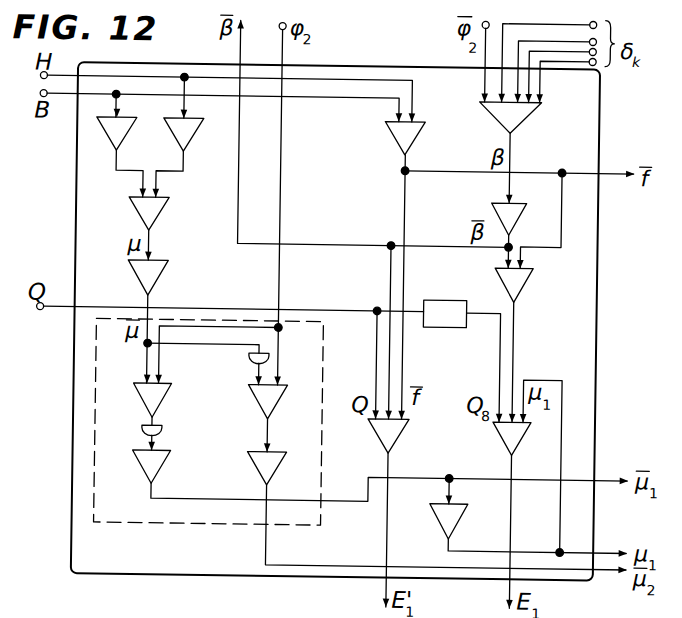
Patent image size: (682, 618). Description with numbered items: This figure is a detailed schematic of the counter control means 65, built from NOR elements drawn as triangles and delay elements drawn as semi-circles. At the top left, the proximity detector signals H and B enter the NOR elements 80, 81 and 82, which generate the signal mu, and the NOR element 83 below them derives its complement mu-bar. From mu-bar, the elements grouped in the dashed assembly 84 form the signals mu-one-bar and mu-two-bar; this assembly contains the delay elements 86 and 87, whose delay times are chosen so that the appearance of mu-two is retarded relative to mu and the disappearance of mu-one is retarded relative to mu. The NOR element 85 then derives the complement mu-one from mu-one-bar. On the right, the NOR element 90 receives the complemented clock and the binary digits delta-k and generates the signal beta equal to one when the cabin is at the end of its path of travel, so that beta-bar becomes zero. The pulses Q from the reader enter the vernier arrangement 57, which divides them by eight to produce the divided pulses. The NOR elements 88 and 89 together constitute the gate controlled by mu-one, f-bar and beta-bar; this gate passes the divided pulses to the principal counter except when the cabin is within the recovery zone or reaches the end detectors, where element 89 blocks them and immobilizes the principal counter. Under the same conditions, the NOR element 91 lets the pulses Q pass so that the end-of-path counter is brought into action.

The vernier arrangement 57 is at (444, 294).
The control means 65 is at (601, 289).
The NOR element 80 is at (112, 128).
The NOR element 81 is at (192, 127).
The NOR element 82 is at (158, 210).
The NOR element 83 is at (160, 275).
The assembly 84 is at (174, 520).
The NOR element 85 is at (448, 508).
The delay element 86 is at (167, 427).
The delay element 87 is at (256, 353).
The NOR element 88 is at (525, 272).
The NOR element 89 is at (506, 425).
The NOR element 90 is at (522, 110).
The NOR element 91 is at (401, 431).